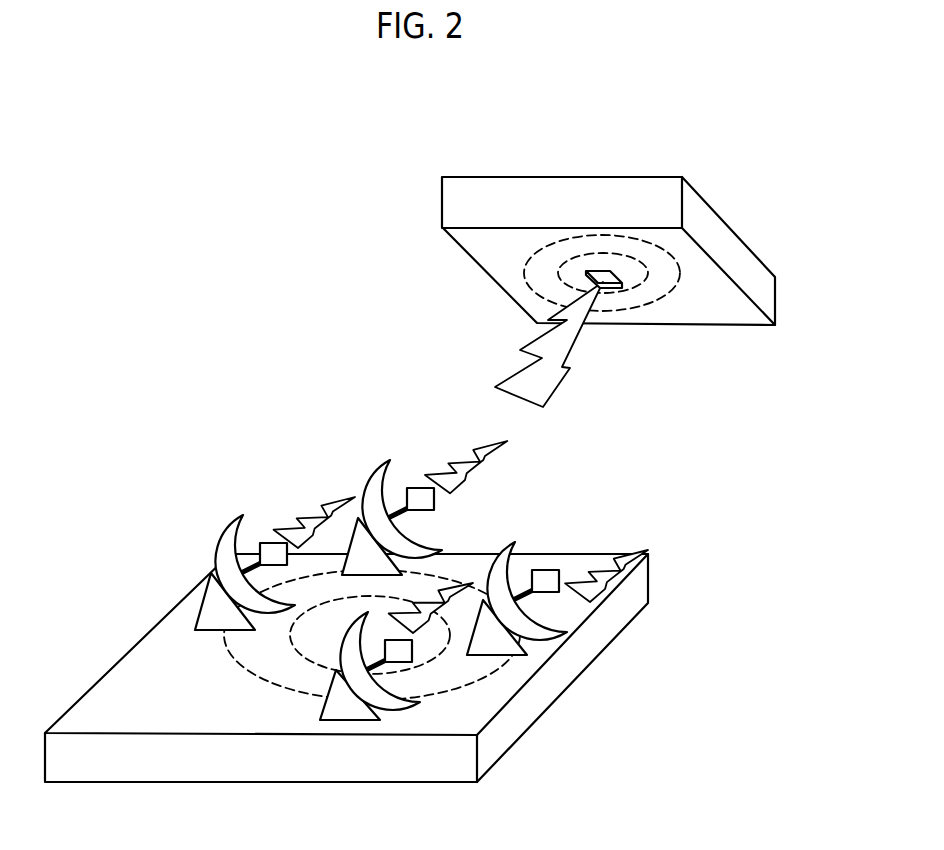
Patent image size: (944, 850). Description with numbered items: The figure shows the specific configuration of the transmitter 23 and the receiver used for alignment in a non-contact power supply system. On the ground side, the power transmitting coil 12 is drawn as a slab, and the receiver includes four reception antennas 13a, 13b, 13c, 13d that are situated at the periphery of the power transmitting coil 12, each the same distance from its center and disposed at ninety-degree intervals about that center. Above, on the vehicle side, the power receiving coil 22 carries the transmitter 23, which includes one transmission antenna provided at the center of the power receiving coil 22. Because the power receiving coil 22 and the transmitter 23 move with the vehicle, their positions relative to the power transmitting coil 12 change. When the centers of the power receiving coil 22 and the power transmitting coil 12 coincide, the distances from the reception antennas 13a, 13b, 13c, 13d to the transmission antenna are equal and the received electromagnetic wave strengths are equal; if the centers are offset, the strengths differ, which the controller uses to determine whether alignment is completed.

The power transmitting coil 12 is at (278, 690).
The reception antenna 13a is at (372, 483).
The reception antenna 13b is at (222, 530).
The reception antenna 13c is at (407, 710).
The reception antenna 13d is at (552, 640).
The power receiving coil 22 is at (573, 238).
The transmitter 23 is at (617, 277).